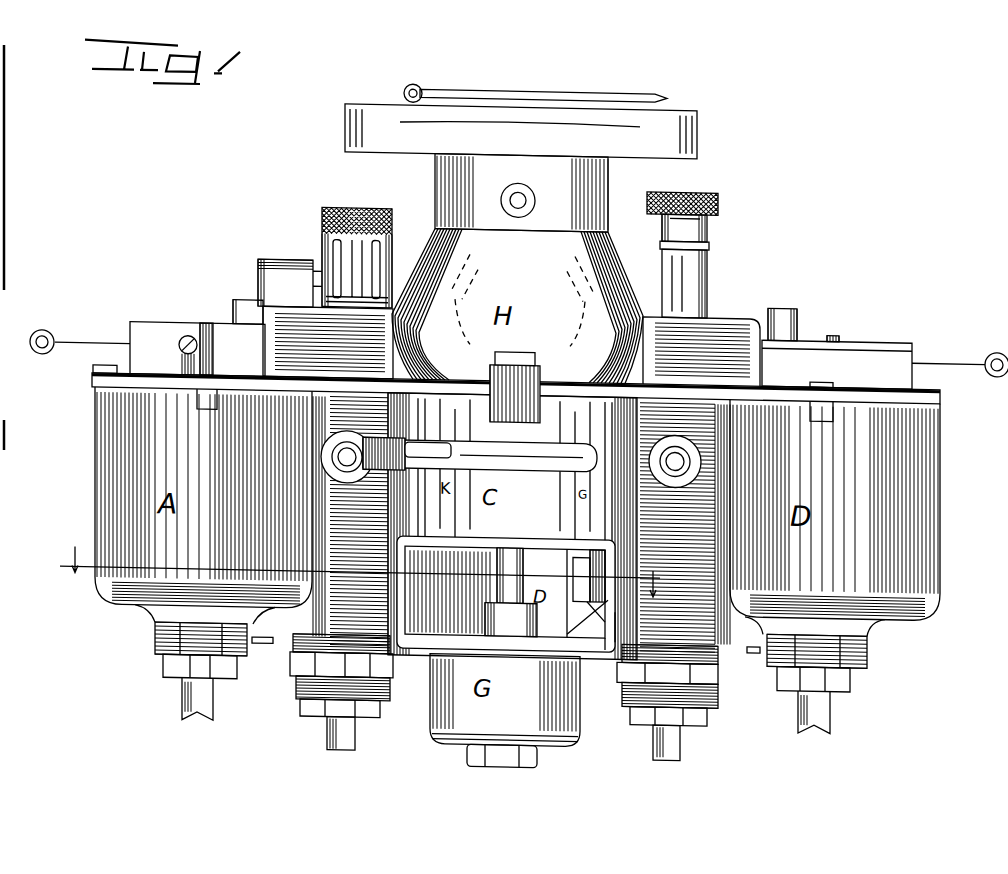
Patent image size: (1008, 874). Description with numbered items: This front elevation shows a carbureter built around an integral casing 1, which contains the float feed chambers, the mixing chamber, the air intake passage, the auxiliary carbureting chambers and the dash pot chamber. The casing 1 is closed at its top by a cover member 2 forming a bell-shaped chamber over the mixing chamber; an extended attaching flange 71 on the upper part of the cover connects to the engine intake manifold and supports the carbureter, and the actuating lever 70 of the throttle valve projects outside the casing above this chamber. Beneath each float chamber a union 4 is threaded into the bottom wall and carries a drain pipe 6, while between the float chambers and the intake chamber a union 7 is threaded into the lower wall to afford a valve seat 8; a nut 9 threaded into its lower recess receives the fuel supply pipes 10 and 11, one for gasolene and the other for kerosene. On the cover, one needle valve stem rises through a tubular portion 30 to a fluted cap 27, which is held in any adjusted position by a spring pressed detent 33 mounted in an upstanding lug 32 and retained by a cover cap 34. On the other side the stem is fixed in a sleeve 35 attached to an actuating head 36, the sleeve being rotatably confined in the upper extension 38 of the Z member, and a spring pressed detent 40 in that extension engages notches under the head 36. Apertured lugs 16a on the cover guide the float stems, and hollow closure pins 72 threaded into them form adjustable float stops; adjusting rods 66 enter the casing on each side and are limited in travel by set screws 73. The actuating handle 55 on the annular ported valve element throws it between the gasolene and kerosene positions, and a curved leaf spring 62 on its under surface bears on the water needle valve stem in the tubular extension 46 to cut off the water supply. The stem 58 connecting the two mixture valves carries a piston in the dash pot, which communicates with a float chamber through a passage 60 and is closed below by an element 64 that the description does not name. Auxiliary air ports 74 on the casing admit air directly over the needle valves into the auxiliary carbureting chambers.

The integral casing 1 is at (140, 607).
The cover member 2 is at (730, 334).
The union 4 is at (165, 678).
The pipe 6 is at (196, 702).
The union 7 is at (300, 672).
The valve seat 8 is at (372, 709).
The nut 9 is at (366, 573).
The fuel supply pipe 10 is at (335, 733).
The fuel supply pipe 11 is at (658, 738).
The apertured lugs 16a is at (213, 353).
The fluted cap 27 is at (355, 211).
The tubular portion 30 is at (705, 288).
The upstanding lug 32 is at (265, 308).
The spring pressed detent 33 is at (323, 268).
The cover cap 34 is at (262, 290).
The sleeve 35 is at (708, 236).
The actuating head 36 is at (703, 189).
The upper extension 38 is at (708, 224).
The spring pressed detent 40 is at (690, 216).
The tubular member 46 is at (627, 613).
The actuating handle 55 is at (435, 449).
The stem 58 is at (502, 588).
The passage 60 is at (597, 657).
The leaf spring 62 is at (590, 558).
The cap 64 is at (470, 758).
The adjusting rod 66 is at (96, 350).
The actuating lever 70 is at (425, 86).
The attaching flange 71 is at (697, 140).
The hollow closure pins 72 is at (208, 325).
The set screw 73 is at (185, 342).
The auxiliary air ports 74 is at (357, 485).